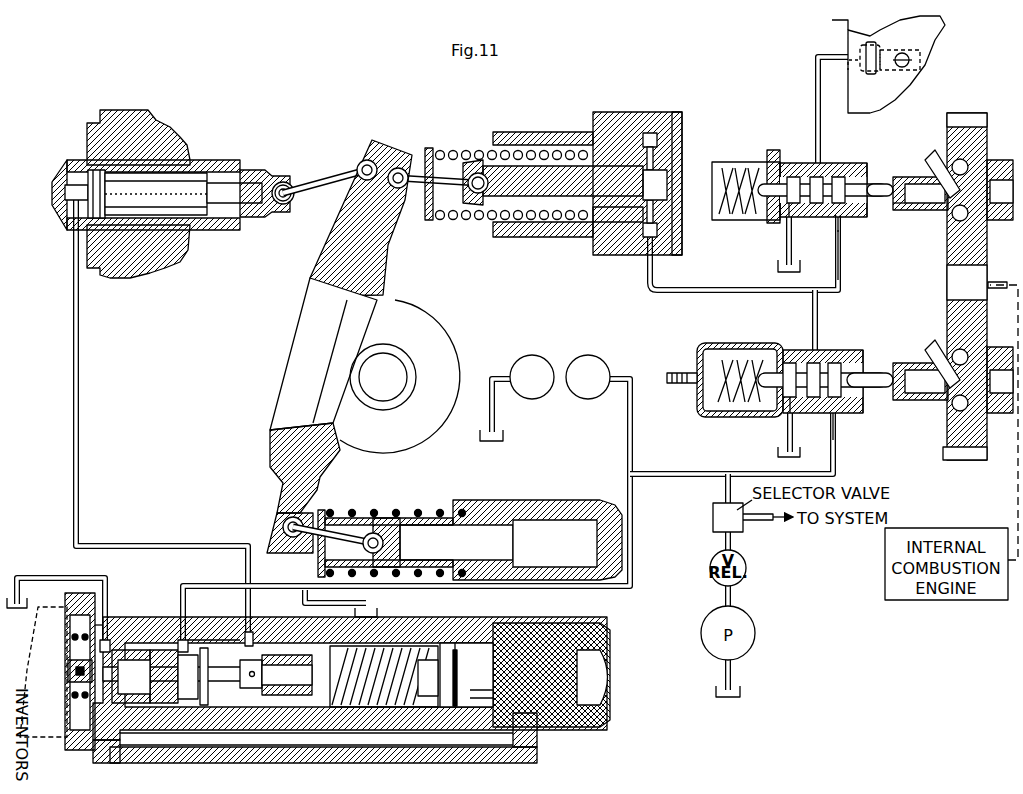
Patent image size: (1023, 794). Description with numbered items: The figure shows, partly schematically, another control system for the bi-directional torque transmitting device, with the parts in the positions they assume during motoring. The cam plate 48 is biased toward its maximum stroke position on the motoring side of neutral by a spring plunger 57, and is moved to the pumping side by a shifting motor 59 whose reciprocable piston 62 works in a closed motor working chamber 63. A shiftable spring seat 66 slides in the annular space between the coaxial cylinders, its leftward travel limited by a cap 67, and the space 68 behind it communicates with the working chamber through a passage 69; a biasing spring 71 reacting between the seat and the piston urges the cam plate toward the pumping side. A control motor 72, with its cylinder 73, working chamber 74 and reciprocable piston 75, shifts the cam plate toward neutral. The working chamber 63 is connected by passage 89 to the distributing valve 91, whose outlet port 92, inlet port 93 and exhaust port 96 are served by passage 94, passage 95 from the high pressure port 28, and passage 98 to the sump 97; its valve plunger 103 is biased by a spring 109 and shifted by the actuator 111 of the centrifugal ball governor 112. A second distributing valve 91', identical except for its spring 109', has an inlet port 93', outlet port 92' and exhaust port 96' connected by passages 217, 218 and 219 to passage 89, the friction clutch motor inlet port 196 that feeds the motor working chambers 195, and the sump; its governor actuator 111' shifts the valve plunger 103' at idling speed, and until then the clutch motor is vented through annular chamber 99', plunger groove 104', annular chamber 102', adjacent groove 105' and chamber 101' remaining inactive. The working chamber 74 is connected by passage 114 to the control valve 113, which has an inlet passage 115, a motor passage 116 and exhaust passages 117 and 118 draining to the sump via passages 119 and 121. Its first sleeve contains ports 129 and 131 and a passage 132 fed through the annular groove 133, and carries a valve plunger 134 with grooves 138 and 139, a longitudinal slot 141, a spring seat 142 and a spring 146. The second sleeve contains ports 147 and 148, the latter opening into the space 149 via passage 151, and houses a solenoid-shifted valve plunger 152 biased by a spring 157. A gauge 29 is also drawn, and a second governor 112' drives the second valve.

The high pressure port 28 is at (590, 356).
The pressure gauge 29 is at (516, 364).
The cam plate 48 is at (310, 277).
The spring plunger 57 is at (382, 515).
The shifting motor 59 is at (540, 150).
The reciprocable piston 62 is at (483, 160).
The motor working chamber 63 is at (660, 190).
The shiftable spring seat 66 is at (580, 232).
The cap 67 is at (522, 236).
The space 68 is at (628, 150).
The passage 69 is at (672, 140).
The biasing spring 71 is at (465, 222).
The control motor 72 is at (212, 158).
The cylinder 73 is at (200, 230).
The working chamber 74 is at (93, 196).
The reciprocable piston 75 is at (263, 220).
The passage 89 is at (703, 293).
The distributing valve 91 is at (875, 392).
The distributing valve 91' is at (884, 208).
The outlet port 92 is at (822, 367).
The outlet port 92' is at (822, 172).
The inlet port 93 is at (851, 435).
The inlet port 93' is at (854, 235).
The passage 94 is at (693, 474).
The passage 95 is at (627, 437).
The exhaust port 96 is at (805, 419).
The exhaust port 96' is at (759, 226).
The sump 97 is at (9, 608).
The passage 98 is at (787, 437).
The annular chamber 99' is at (797, 172).
The annular chamber 101' is at (887, 217).
The annular chamber 102' is at (762, 182).
The valve plunger 103 is at (877, 361).
The valve plunger 103' is at (894, 168).
The annular groove 104' is at (820, 215).
The annular groove 105' is at (844, 172).
The spring 109 is at (725, 390).
The spring 109' is at (745, 180).
The actuator 111 is at (920, 399).
The governor actuator 111' is at (920, 216).
The centrifugal ball governor 112 is at (957, 380).
The cam 112' is at (971, 273).
The control valve 113 is at (470, 643).
The passage 114 is at (80, 350).
The inlet passage 115 is at (145, 640).
The motor passage 116 is at (224, 638).
The exhaust passage 117 is at (252, 630).
The exhaust passage 118 is at (70, 620).
The passage 119 is at (305, 590).
The passage 121 is at (52, 575).
The port 129 is at (252, 690).
The port 131 is at (252, 645).
The passage 132 is at (192, 703).
The annular groove 133 is at (186, 645).
The valve plunger 134 is at (384, 686).
The annular groove 138 is at (316, 740).
The annular groove 139 is at (285, 696).
The longitudinal slot 141 is at (204, 648).
The spring seat 142 is at (456, 643).
The spring 146 is at (418, 660).
The port 147 is at (140, 616).
The port 148 is at (145, 703).
The space 149 is at (512, 640).
The passage 151 is at (378, 758).
The valve plunger 152 is at (316, 740).
The spring 157 is at (68, 706).
The motor working chambers 195 is at (858, 70).
The inlet port 196 is at (850, 50).
The passage 217 is at (842, 270).
The passage 218 is at (814, 90).
The passage 219 is at (778, 262).